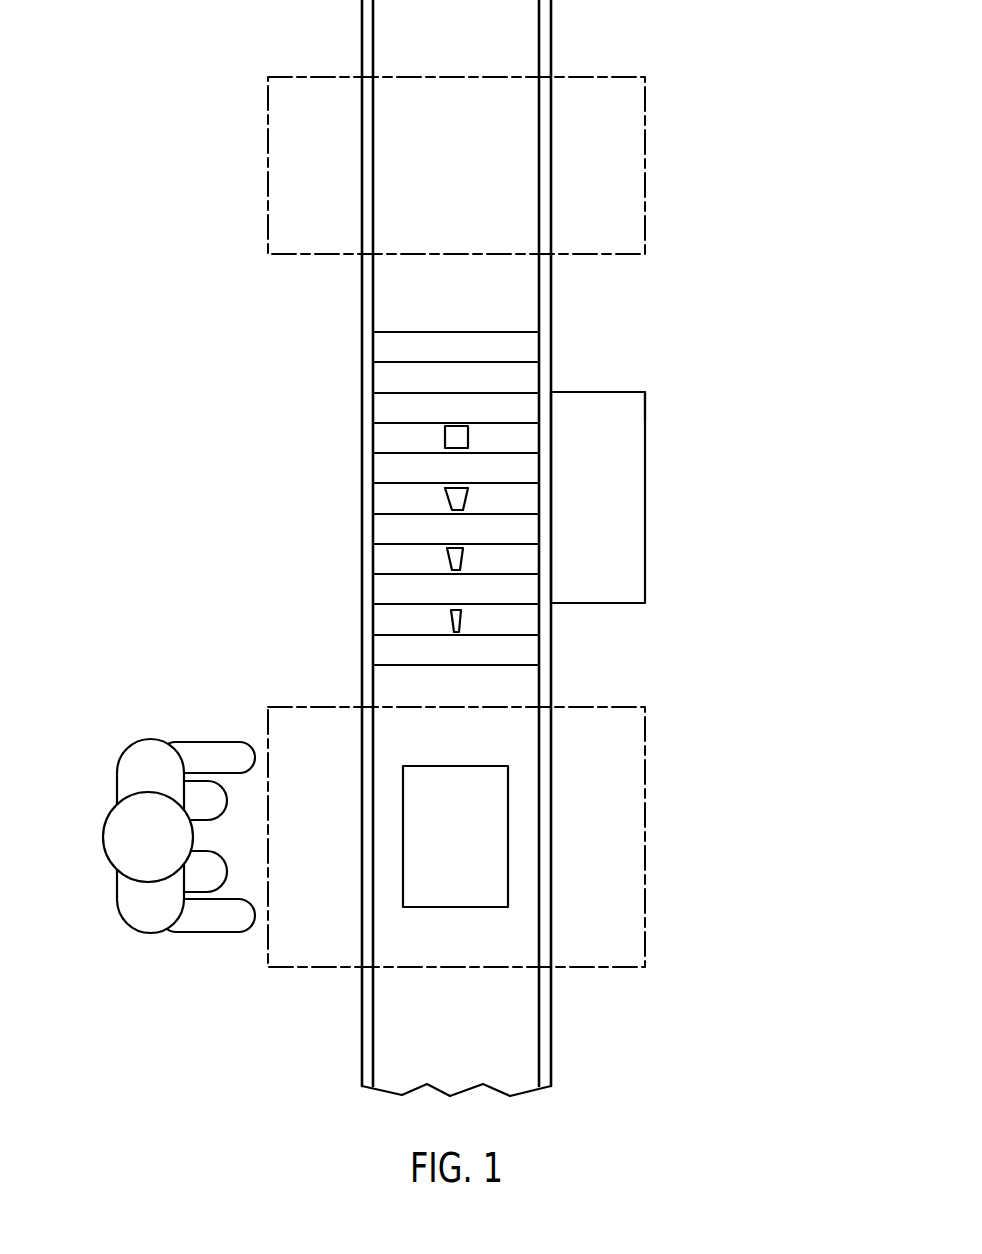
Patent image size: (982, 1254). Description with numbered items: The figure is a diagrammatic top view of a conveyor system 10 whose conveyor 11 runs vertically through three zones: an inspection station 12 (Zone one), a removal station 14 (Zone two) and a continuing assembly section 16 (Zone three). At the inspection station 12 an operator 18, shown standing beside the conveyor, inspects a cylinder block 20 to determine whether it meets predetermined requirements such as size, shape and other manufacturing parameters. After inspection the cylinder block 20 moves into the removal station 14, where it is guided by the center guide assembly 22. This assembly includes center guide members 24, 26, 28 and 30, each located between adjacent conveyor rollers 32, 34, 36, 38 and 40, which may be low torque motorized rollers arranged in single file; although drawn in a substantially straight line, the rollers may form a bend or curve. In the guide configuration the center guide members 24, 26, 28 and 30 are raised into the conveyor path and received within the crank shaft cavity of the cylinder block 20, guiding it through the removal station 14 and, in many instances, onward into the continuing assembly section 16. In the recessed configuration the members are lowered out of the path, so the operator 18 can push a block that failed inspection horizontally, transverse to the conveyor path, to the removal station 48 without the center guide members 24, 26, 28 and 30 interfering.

The conveyor system 10 is at (438, 548).
The conveyor 11 is at (429, 548).
The inspection station 12 is at (429, 858).
The removal station 14 is at (675, 491).
The continuing assembly section 16 is at (434, 165).
The operator 18 is at (117, 773).
The cylinder block 20 is at (508, 812).
The center guide assembly 22 is at (408, 494).
The center guide member 24 is at (457, 619).
The center guide member 26 is at (456, 557).
The center guide member 28 is at (459, 497).
The center guide member 30 is at (459, 437).
The conveyor roller 32 is at (503, 665).
The conveyor roller 34 is at (381, 587).
The conveyor roller 36 is at (381, 527).
The conveyor roller 38 is at (381, 462).
The conveyor roller 40 is at (381, 407).
The removal station 48 is at (633, 410).